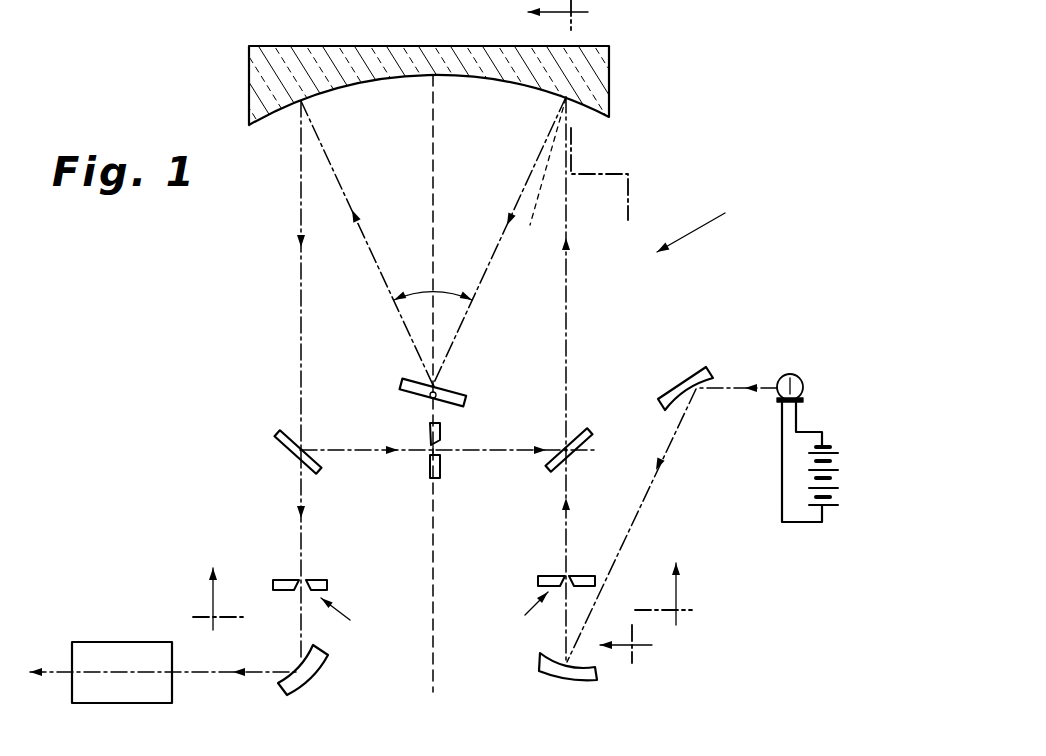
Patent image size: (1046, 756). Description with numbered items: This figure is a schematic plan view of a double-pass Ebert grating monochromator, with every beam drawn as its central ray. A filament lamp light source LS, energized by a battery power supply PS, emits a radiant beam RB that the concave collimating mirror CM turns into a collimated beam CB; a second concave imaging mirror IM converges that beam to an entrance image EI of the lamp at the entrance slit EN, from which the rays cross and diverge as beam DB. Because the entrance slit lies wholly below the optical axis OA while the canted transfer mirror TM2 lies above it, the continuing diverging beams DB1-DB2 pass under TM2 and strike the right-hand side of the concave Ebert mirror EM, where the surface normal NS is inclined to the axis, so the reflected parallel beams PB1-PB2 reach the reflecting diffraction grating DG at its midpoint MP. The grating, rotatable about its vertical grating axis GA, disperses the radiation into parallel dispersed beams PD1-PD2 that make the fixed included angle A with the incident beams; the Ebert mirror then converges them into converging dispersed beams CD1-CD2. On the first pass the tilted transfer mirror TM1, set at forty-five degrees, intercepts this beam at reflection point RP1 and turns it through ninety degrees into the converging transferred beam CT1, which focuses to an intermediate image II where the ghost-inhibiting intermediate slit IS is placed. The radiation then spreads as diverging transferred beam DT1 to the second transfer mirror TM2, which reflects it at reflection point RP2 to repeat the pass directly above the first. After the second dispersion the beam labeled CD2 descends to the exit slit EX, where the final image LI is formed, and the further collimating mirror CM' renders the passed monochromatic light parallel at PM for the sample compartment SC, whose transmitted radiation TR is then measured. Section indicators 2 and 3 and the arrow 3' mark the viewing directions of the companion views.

The Ebert mirror EM is at (316, 45).
The parallel dispersed beams PD1-PD2 is at (358, 136).
The parallel beams PB1-PB2 is at (538, 160).
The normal to the surface NS is at (544, 195).
The included angle A is at (448, 291).
The converging dispersed beams CD1-CD2 is at (299, 298).
The diverging beams DB1-DB2 is at (567, 313).
The grating midpoint MP is at (436, 388).
The diffraction grating DG is at (446, 397).
The grating axis GA is at (429, 396).
The reflection point of first transfer mirror RP1 is at (302, 449).
The reflection point of second transfer mirror RP2 is at (567, 450).
The first transfer mirror TM1 is at (282, 452).
The second transfer mirror TM2 is at (590, 448).
The diverging transferred beam DT1 is at (482, 452).
The converging transferred first beam CT1 is at (351, 455).
The intermediate image II is at (425, 458).
The intermediate slit IS is at (441, 470).
The second-pass converging dispersed beam CD2 is at (300, 492).
The exit slit LI is at (305, 580).
The exit slit EX is at (352, 616).
The entrance slit EN is at (517, 611).
The entrance image EI is at (565, 577).
The diverging beam DB is at (570, 541).
The collimated beam CB is at (645, 487).
The collimating mirror CM is at (677, 374).
The radiant beam RB is at (710, 388).
The light source LS is at (798, 379).
The power supply PS is at (810, 494).
The sample compartment SC is at (112, 641).
The parallel monochromatic beam PM is at (198, 674).
The transmitted radiation TR is at (53, 677).
The further collimating mirror CM' is at (323, 674).
The optical axis OA is at (436, 662).
The imaging mirror IM is at (582, 681).
The view indicator 2 is at (443, 587).
The view indicator 3 is at (579, 331).
The view direction 3' is at (702, 230).